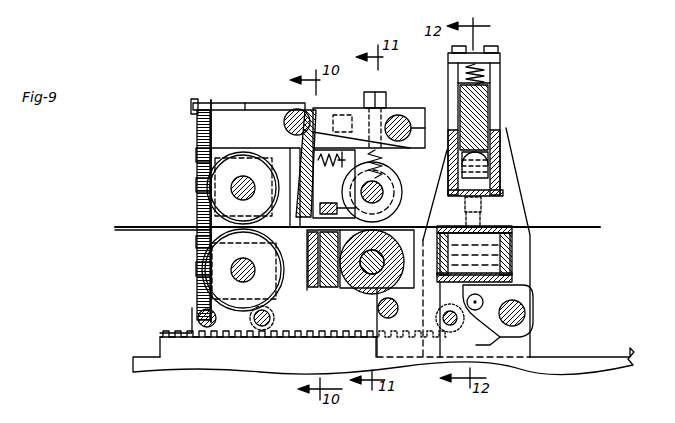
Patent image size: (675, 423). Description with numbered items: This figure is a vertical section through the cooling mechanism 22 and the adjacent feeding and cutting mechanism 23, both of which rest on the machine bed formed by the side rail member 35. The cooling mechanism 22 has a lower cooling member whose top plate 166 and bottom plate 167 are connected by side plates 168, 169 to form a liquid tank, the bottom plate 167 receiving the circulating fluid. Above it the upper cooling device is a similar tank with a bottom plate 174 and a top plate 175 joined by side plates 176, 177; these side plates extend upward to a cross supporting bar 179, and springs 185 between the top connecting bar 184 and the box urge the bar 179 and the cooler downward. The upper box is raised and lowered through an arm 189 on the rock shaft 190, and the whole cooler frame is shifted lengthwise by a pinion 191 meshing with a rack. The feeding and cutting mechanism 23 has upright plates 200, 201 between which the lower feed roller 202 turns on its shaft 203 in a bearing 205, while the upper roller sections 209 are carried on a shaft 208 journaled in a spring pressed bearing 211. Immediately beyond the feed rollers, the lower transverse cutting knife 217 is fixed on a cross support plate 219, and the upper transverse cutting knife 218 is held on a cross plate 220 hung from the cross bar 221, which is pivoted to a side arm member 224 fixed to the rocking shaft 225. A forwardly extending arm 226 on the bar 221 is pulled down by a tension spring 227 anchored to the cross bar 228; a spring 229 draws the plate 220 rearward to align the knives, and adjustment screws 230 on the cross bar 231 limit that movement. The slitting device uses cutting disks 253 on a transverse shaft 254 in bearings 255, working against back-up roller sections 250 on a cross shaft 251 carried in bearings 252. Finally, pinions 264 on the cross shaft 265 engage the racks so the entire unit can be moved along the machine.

The side rail member 35 is at (592, 357).
The pinion 264 is at (258, 337).
The cross shaft 265 is at (248, 335).
The tension spring 227 is at (197, 130).
The upright plate 200 is at (197, 145).
The bearing 255 is at (197, 153).
The cutting knife or disk 253 is at (197, 185).
The transverse shaft 254 is at (232, 192).
The bearing 252 is at (197, 242).
The lower back-up roller section 250 is at (199, 270).
The cross shaft 251 is at (232, 275).
The cross bar 228 is at (198, 318).
The upright plate 201 is at (280, 157).
The feeding and cutting mechanism 23 is at (202, 100).
The forwardly extending arm 226 is at (247, 102).
The cross plate 220 is at (309, 110).
The cross bar 221 is at (284, 124).
The side arm member 224 is at (352, 108).
The rocking shaft 225 is at (398, 116).
The spring pressed bearing 211 is at (388, 172).
The shaft 208 is at (383, 186).
The roller section 209 is at (391, 196).
The spring 229 is at (334, 184).
The adjustment screw 230 is at (331, 177).
The cross bar 231 is at (335, 202).
The upper transverse cutting knife 218 is at (283, 226).
The shaft 203 is at (330, 288).
The cross support plate 219 is at (353, 274).
The lower feed roller 202 is at (365, 290).
The lower transverse cutting knife 217 is at (308, 290).
The bearing 205 is at (397, 305).
The side plate 176 is at (452, 152).
The cooling mechanism 22 is at (508, 62).
The top connecting bar 184 is at (489, 48).
The spring 185 is at (488, 85).
The cross supporting bar 179 is at (490, 128).
The side plate 177 is at (488, 150).
The top plate 175 is at (495, 170).
The bottom plate 174 is at (486, 200).
The top plate 166 is at (515, 230).
The side plate 169 is at (512, 267).
The bottom plate 167 is at (533, 292).
The arm 189 is at (525, 303).
The rock shaft 190 is at (525, 320).
The pinion 191 is at (455, 334).
The side plate 168 is at (467, 298).